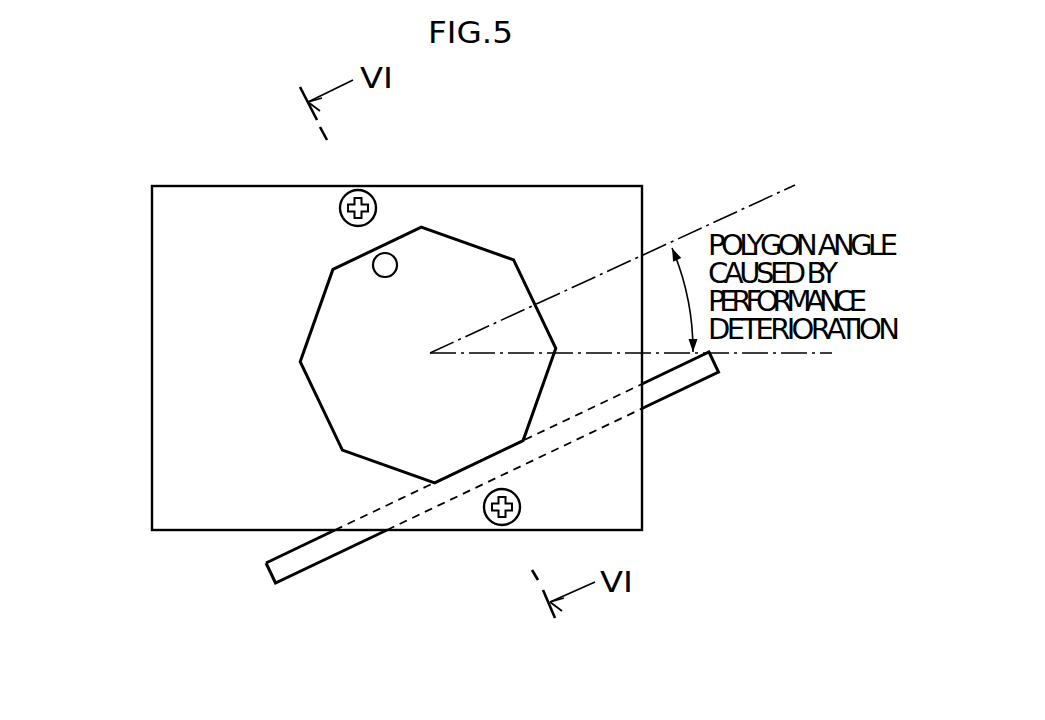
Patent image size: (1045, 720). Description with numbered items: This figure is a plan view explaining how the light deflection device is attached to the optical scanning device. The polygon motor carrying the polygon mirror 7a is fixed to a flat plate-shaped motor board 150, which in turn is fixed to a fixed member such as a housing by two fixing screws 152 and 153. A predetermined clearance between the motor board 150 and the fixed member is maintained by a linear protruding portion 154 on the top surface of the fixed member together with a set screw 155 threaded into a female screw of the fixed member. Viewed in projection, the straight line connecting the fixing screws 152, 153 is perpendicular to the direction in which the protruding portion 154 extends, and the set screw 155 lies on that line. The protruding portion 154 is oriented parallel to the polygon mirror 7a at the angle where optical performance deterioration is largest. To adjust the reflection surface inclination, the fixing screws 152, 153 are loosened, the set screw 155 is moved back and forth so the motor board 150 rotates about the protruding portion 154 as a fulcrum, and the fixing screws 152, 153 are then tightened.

The motor board 150 is at (630, 461).
The fixing screw 152 is at (367, 190).
The fixing screw 153 is at (489, 526).
The protruding portion 154 is at (313, 554).
The set screw 155 is at (374, 262).
The polygon mirror 7a is at (523, 268).